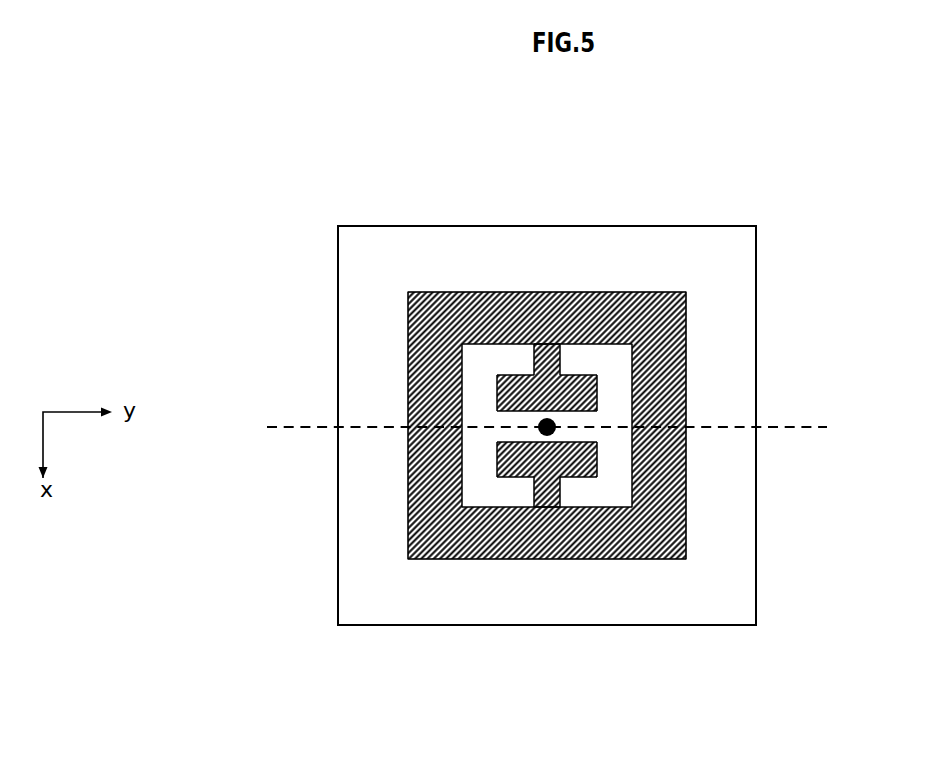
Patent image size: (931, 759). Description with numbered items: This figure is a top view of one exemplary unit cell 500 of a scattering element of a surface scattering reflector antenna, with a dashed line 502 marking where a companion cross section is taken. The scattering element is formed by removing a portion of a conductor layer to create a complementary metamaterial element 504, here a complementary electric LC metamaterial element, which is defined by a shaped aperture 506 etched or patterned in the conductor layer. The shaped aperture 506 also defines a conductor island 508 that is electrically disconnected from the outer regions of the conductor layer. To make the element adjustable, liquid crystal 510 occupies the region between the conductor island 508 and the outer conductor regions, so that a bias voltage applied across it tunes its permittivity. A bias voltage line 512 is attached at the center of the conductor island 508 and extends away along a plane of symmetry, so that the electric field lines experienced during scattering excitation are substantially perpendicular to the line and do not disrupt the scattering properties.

The unit cell 500 is at (262, 664).
The dashed line 502 is at (288, 428).
The complementary metamaterial element 504 is at (633, 538).
The shaped aperture 506 is at (455, 604).
The conductor island 508 is at (615, 370).
The liquid crystal 510 is at (428, 374).
The bias voltage line 512 is at (547, 418).